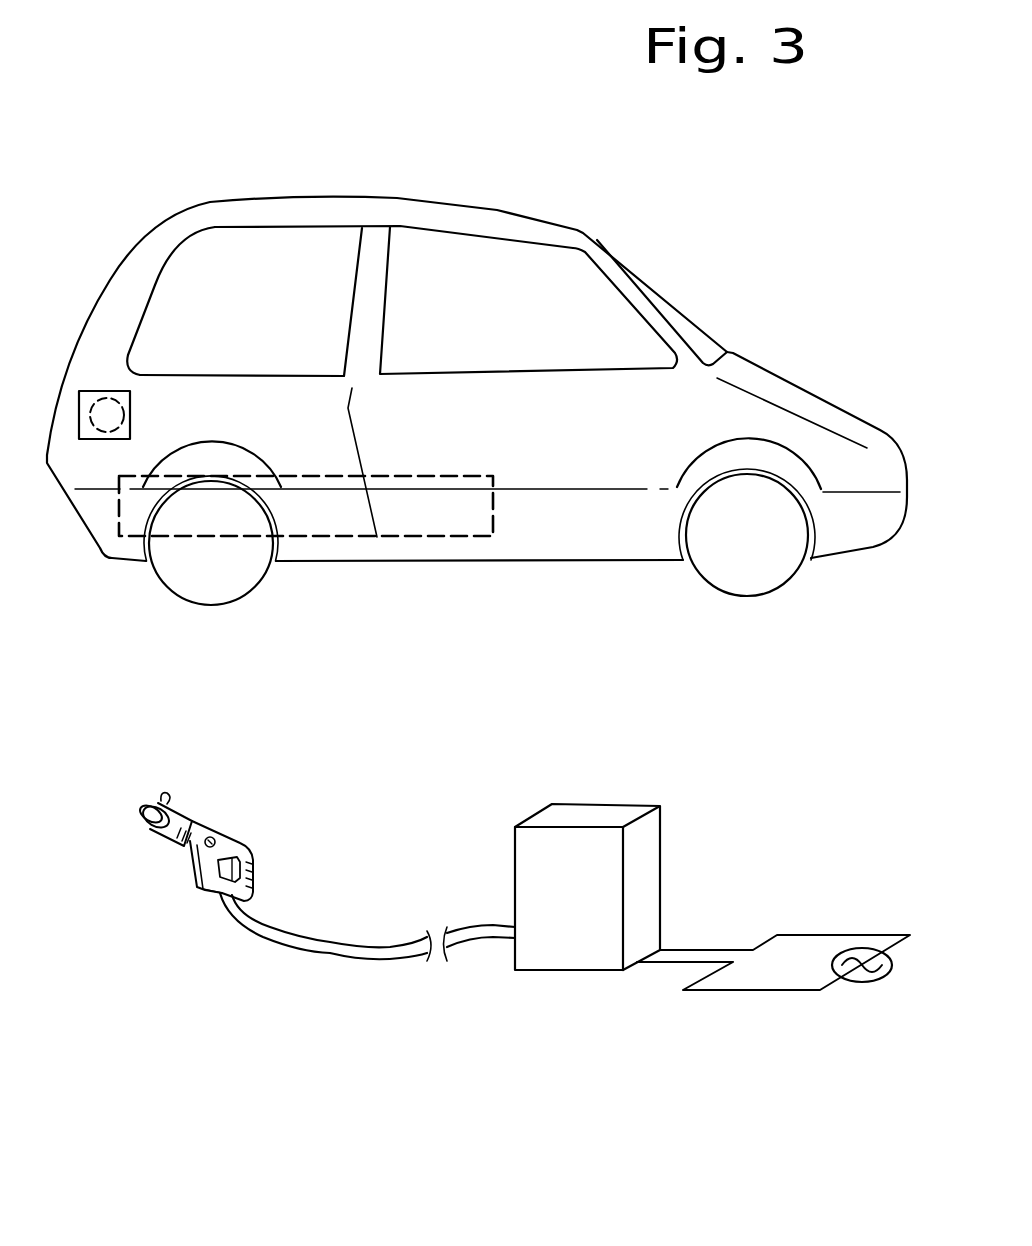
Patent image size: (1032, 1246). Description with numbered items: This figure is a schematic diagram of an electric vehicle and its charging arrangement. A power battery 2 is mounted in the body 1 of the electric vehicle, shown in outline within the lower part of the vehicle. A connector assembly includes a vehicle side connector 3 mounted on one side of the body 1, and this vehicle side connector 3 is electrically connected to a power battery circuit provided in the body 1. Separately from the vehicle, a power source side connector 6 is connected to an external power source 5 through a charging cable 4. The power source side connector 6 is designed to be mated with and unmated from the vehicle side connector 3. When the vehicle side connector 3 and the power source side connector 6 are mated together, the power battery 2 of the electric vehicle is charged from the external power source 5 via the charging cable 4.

The body 1 is at (345, 192).
The power battery 2 is at (493, 512).
The vehicle side connector 3 is at (80, 422).
The charging cable 4 is at (323, 957).
The external power source 5 is at (853, 985).
The power source side connector 6 is at (173, 847).